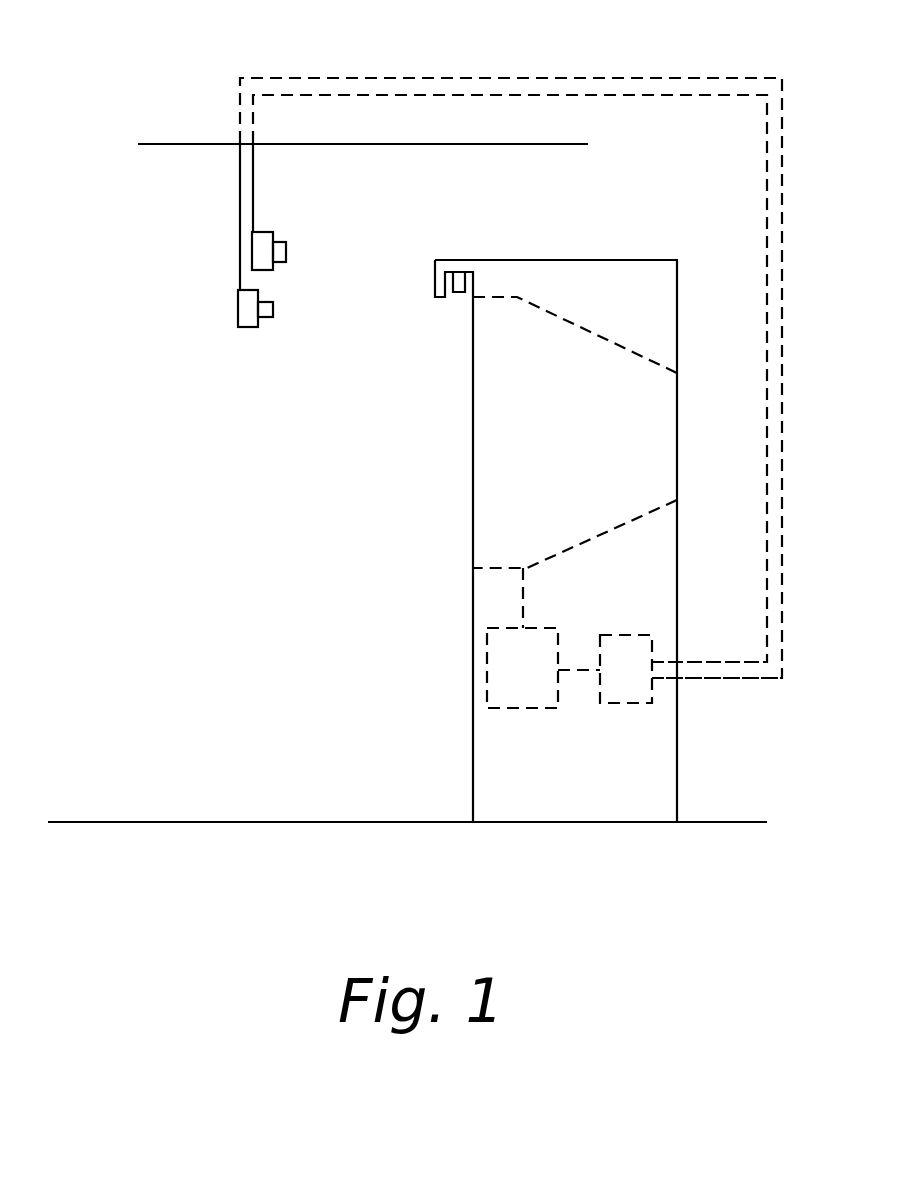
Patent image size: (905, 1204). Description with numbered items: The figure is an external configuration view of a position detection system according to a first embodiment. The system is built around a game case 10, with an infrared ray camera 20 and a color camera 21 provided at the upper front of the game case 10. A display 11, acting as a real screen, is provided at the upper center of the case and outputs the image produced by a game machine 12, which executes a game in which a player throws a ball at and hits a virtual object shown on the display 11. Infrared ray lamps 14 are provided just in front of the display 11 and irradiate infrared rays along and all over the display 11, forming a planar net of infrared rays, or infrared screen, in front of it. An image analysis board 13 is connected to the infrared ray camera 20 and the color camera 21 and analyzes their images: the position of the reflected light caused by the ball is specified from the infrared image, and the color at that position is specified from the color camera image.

The game case 10 is at (630, 260).
The display 11 is at (640, 345).
The game machine 12 is at (487, 675).
The image analysis board 13 is at (663, 692).
The infrared ray lamp 14 is at (462, 293).
The infrared ray camera 20 is at (263, 233).
The color camera 21 is at (240, 305).